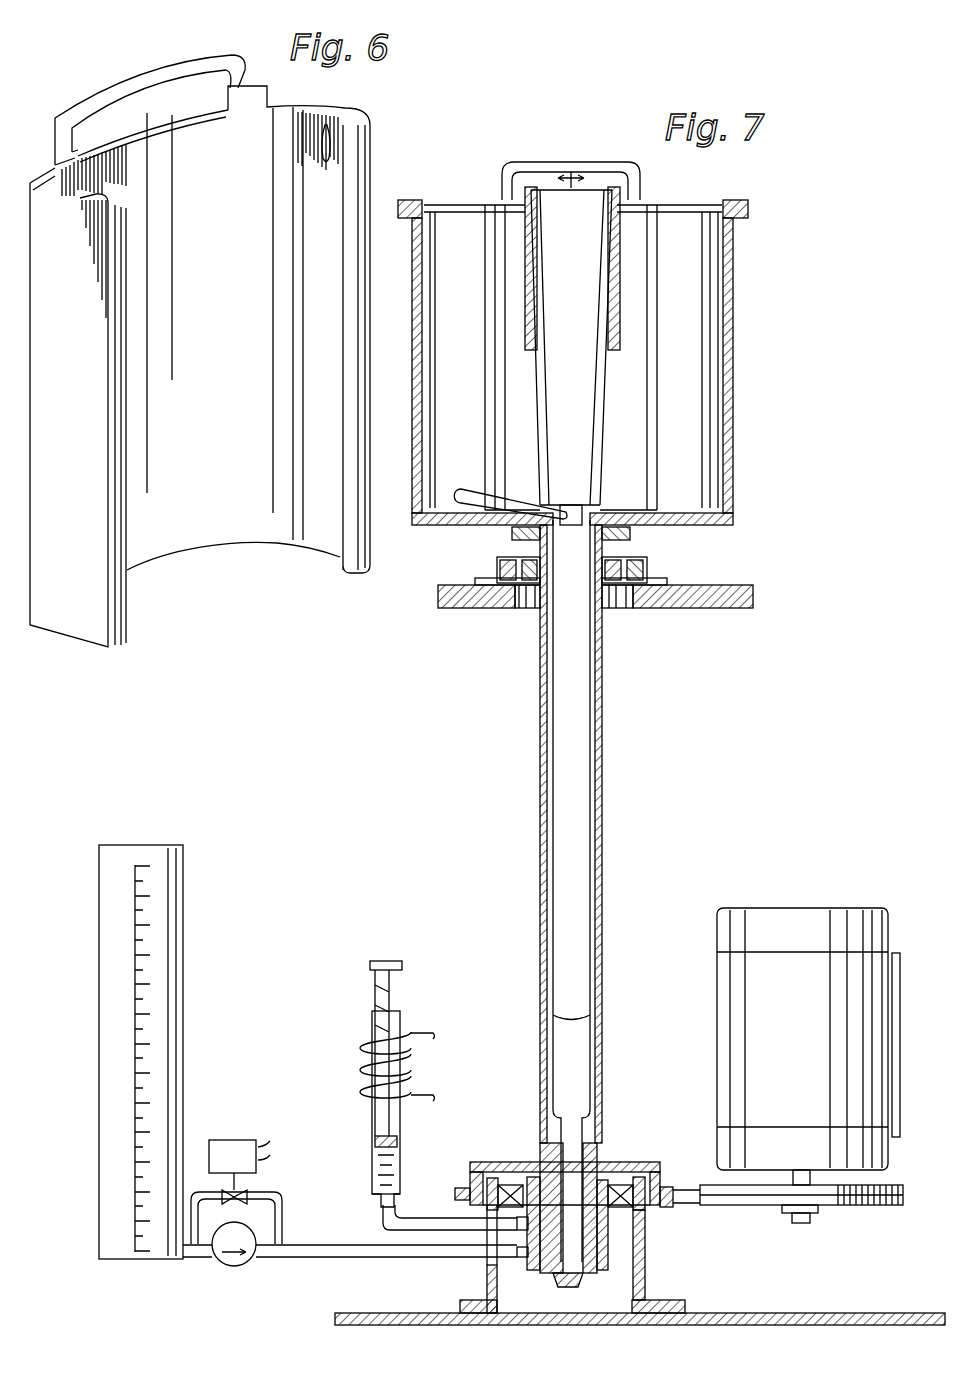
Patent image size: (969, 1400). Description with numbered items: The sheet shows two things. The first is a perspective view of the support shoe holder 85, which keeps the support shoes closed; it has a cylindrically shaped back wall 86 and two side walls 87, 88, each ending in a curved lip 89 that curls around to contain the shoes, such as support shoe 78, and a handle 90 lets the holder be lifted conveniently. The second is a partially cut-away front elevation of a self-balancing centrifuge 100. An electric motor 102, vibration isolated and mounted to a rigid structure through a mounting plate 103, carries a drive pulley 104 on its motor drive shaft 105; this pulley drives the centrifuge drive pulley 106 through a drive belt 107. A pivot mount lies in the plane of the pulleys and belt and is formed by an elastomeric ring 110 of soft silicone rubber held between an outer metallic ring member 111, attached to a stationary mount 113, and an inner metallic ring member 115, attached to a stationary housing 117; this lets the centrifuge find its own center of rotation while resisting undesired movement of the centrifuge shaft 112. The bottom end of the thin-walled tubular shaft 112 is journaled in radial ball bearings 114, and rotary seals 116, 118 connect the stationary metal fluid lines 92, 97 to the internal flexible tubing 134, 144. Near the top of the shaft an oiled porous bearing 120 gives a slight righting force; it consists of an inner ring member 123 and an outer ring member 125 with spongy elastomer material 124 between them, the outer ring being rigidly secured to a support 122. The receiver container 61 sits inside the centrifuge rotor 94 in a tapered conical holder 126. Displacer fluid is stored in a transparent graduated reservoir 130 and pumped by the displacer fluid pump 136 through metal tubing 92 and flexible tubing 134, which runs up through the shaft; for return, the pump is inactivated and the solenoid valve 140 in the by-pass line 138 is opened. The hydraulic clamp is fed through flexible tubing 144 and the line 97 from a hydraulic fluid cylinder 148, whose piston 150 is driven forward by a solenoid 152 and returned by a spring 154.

In FIG. 6, the support shoe holder 85 is at (205, 351).
In FIG. 6, the back wall 86 is at (227, 352).
In FIG. 6, the side wall 87 is at (78, 558).
In FIG. 6, the side wall 88 is at (326, 126).
In FIG. 6, the curved lip 89 is at (355, 572).
In FIG. 6, the handle 90 is at (143, 70).
In FIG. 7, the handle 90 is at (548, 166).
In FIG. 7, the receiver container 61 is at (579, 312).
In FIG. 7, the support shoe 78 is at (622, 402).
In FIG. 7, the centrifuge rotor 94 is at (735, 263).
In FIG. 7, the centrifuge 100 is at (645, 669).
In FIG. 7, the electric motor 102 is at (814, 1008).
In FIG. 7, the mounting plate 103 is at (892, 960).
In FIG. 7, the drive pulley 104 is at (775, 1207).
In FIG. 7, the motor drive shaft 105 is at (812, 1218).
In FIG. 7, the centrifuge drive pulley 106 is at (665, 1185).
In FIG. 7, the drive belt 107 is at (677, 1205).
In FIG. 7, the elastomeric ring 110 is at (624, 1170).
In FIG. 7, the outer metallic ring member 111 is at (612, 1218).
In FIG. 7, the centrifuge shaft 112 is at (594, 944).
In FIG. 7, the stationary mount 113 is at (656, 1303).
In FIG. 7, the radial ball bearings 114 is at (527, 1180).
In FIG. 7, the inner metallic ring member 115 is at (641, 1235).
In FIG. 7, the rotary seal 116 is at (520, 1265).
In FIG. 7, the stationary housing 117 is at (600, 1270).
In FIG. 7, the rotary seal 118 is at (535, 1236).
In FIG. 7, the oiled porous bearing 120 is at (608, 554).
In FIG. 7, the support 122 is at (705, 594).
In FIG. 7, the inner ring member 123 is at (526, 609).
In FIG. 7, the spongy elastomer material 124 is at (640, 568).
In FIG. 7, the outer ring member 125 is at (493, 568).
In FIG. 7, the tapered conical holder 126 is at (625, 237).
In FIG. 7, the graduated reservoir 130 is at (178, 972).
In FIG. 7, the flexible tubing 134 is at (457, 522).
In FIG. 7, the displacer fluid pump 136 is at (234, 1268).
In FIG. 7, the by-pass line 138 is at (282, 1209).
In FIG. 7, the solenoid valve 140 is at (254, 1140).
In FIG. 7, the flexible tubing 144 is at (588, 866).
In FIG. 7, the hydraulic fluid cylinder 148 is at (398, 1028).
In FIG. 7, the piston 150 is at (386, 961).
In FIG. 7, the solenoid 152 is at (362, 1040).
In FIG. 7, the spring 154 is at (377, 995).
In FIG. 7, the metal tubing 92 is at (306, 1259).
In FIG. 7, the fluid line 97 is at (430, 1219).